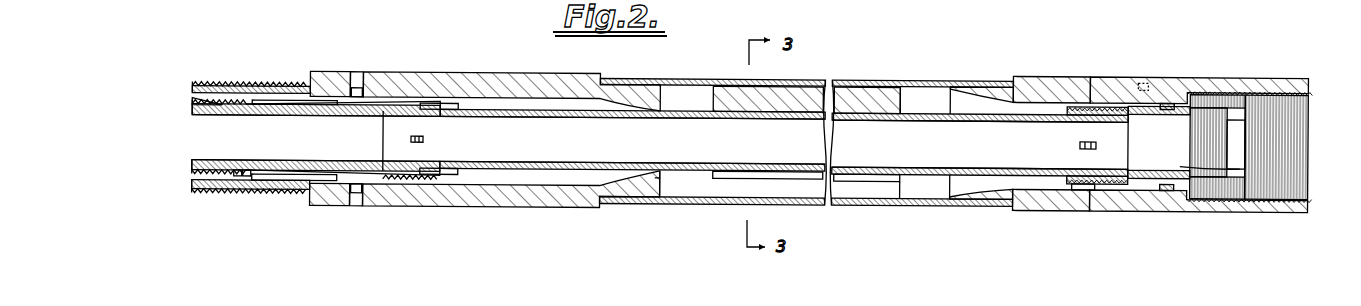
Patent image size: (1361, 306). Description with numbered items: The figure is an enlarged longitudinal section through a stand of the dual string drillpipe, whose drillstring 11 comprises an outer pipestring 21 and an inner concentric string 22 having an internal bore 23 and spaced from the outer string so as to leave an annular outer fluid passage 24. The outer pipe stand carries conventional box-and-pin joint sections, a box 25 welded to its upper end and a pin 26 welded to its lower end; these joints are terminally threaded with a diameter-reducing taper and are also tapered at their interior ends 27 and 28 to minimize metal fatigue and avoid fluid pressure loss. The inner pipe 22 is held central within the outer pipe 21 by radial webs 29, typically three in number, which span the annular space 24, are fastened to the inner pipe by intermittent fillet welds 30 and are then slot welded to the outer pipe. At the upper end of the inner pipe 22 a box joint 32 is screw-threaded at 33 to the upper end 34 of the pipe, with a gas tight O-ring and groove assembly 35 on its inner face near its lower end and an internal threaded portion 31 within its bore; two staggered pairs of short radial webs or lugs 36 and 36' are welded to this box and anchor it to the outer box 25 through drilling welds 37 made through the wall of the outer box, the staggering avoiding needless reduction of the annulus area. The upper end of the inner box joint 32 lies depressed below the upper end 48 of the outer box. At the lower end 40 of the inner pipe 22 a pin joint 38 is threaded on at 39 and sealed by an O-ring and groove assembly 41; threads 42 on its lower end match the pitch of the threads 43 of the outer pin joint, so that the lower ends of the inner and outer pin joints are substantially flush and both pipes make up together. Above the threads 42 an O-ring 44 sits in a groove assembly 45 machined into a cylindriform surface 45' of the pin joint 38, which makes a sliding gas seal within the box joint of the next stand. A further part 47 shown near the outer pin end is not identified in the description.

The drillstring 11 is at (968, 58).
The outer pipestring 21 is at (923, 83).
The inner concentric string 22 is at (727, 178).
The internal bore 23 is at (688, 130).
The annular outer fluid passage 24 is at (863, 192).
The box joint section 25 is at (1117, 70).
The pin joint section 26 is at (472, 66).
The tapered interior end of box joint 27 is at (968, 192).
The tapered interior end of pin joint 28 is at (660, 197).
The radial webs 29 is at (860, 98).
The intermittent fillet welds 30 is at (785, 112).
The internal threaded portion 31 is at (1205, 150).
The box joint 32 is at (1180, 128).
The screw threads 33 is at (1090, 98).
The upper end of inner pipe 34 is at (1068, 119).
The O-ring and groove assembly 35 is at (1080, 184).
The radial webs or lugs 36 is at (1180, 122).
The radial webs or lugs 36' is at (1064, 151).
The drilling welds 37 is at (1143, 80).
The pin joint 38 is at (317, 170).
The threads 39 is at (403, 173).
The lower end of interior pipe 40 is at (460, 173).
The O-ring and groove assembly 41 is at (433, 107).
The threads 42 is at (210, 105).
The threads of outer pin joint 43 is at (255, 82).
The O-ring 44 is at (240, 170).
The groove assembly 45 is at (226, 200).
The cylindriform surface 45' is at (262, 195).
The housing collar 47 is at (310, 72).
The upper end of box joint 48 is at (1308, 82).